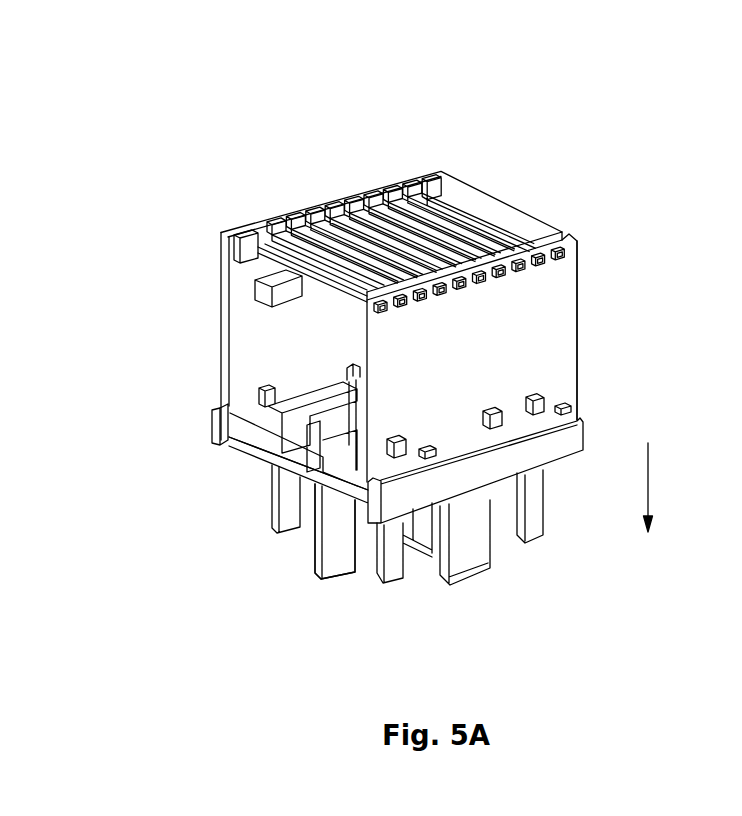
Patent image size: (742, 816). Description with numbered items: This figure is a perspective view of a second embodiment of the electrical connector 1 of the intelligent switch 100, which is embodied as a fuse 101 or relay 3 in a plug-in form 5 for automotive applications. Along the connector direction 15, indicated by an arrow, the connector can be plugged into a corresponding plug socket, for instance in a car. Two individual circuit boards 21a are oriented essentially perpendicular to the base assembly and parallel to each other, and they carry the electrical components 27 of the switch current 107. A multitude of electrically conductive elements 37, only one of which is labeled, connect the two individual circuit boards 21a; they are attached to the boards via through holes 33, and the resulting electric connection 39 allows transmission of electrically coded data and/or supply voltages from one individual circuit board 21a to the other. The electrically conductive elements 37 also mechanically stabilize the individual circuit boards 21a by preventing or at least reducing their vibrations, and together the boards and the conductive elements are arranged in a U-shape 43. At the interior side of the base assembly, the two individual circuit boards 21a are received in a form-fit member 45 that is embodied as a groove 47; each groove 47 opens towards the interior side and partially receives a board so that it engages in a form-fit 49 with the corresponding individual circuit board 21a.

The intelligent switch 100 is at (464, 266).
The fuse 101 is at (385, 152).
The electrical connector 1 is at (320, 176).
The relay 3 is at (407, 525).
The plug-in form 5 is at (479, 426).
The electric connection 39 is at (488, 182).
The electrically conductive elements 37 is at (492, 217).
The U-shape 43 is at (594, 222).
The through hole 33 is at (587, 249).
The individual circuit boards 21a is at (220, 325).
The electrical component 27 is at (257, 285).
The switch current 107 is at (242, 376).
The form-fit 49 is at (193, 449).
The form-fit member 45 is at (222, 442).
The groove 47 is at (361, 508).
The connector direction 15 is at (650, 488).